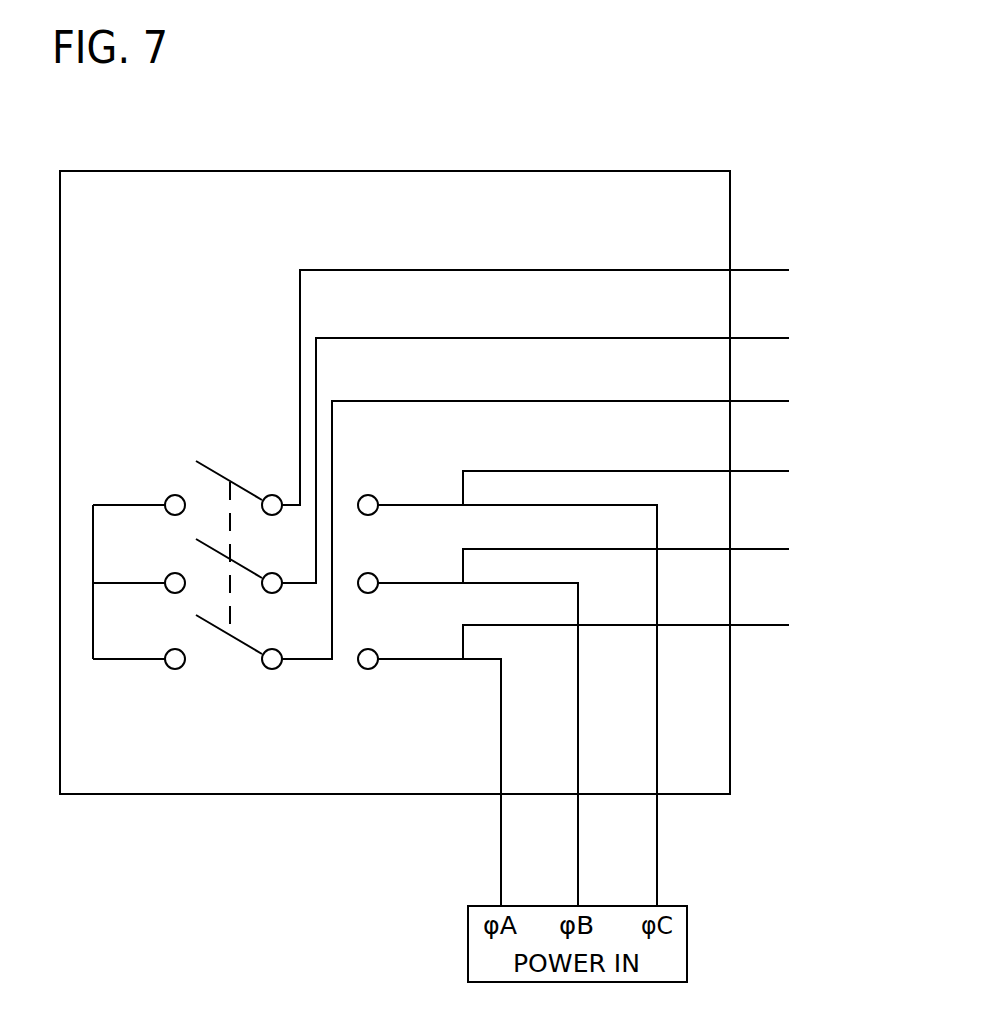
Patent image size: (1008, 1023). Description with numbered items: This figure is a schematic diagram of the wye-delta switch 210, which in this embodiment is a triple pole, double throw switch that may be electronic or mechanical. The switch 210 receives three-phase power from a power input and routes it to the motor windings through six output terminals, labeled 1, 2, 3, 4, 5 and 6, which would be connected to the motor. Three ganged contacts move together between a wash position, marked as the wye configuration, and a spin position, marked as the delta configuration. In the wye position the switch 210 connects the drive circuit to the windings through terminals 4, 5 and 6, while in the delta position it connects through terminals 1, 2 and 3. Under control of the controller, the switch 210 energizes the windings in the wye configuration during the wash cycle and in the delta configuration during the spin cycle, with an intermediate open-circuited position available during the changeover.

The wye-delta switch 210 is at (577, 171).
The motor terminal 1 is at (599, 680).
The motor terminal 2 is at (599, 719).
The motor terminal 3 is at (599, 757).
The motor terminal 4 is at (551, 452).
The motor terminal 5 is at (551, 522).
The motor terminal 6 is at (551, 379).